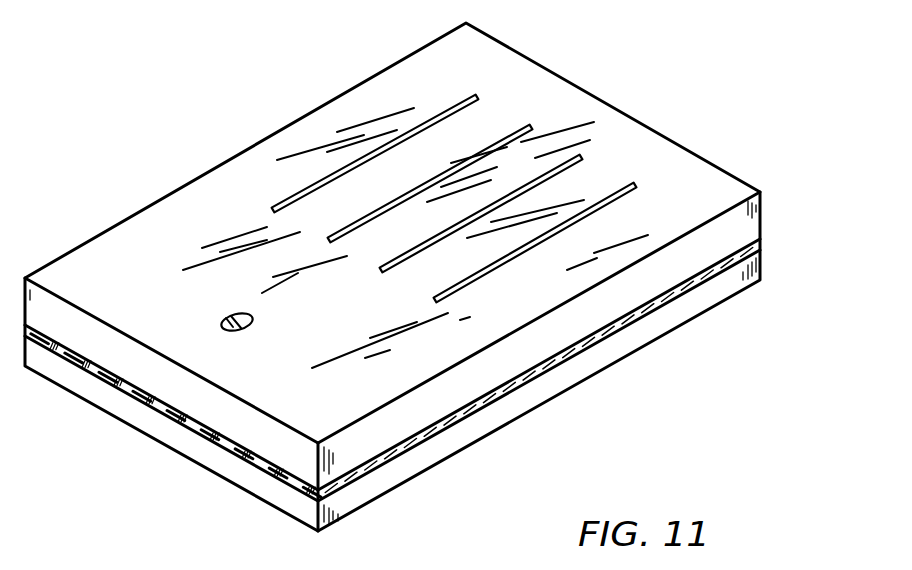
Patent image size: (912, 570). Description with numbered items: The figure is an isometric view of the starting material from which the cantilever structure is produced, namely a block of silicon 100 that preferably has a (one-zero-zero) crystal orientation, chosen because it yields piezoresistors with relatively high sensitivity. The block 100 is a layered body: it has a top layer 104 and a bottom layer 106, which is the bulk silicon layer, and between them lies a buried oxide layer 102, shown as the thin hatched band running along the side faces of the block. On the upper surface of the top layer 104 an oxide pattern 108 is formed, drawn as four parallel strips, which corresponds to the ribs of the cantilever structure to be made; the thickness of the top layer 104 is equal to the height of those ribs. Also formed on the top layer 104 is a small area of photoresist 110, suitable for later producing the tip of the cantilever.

The block of silicon 100 is at (773, 169).
The buried oxide layer 102 is at (757, 256).
The top layer 104 is at (410, 442).
The bottom layer 106 is at (552, 388).
The oxide pattern 108 is at (473, 92).
The photoresist 110 is at (224, 318).